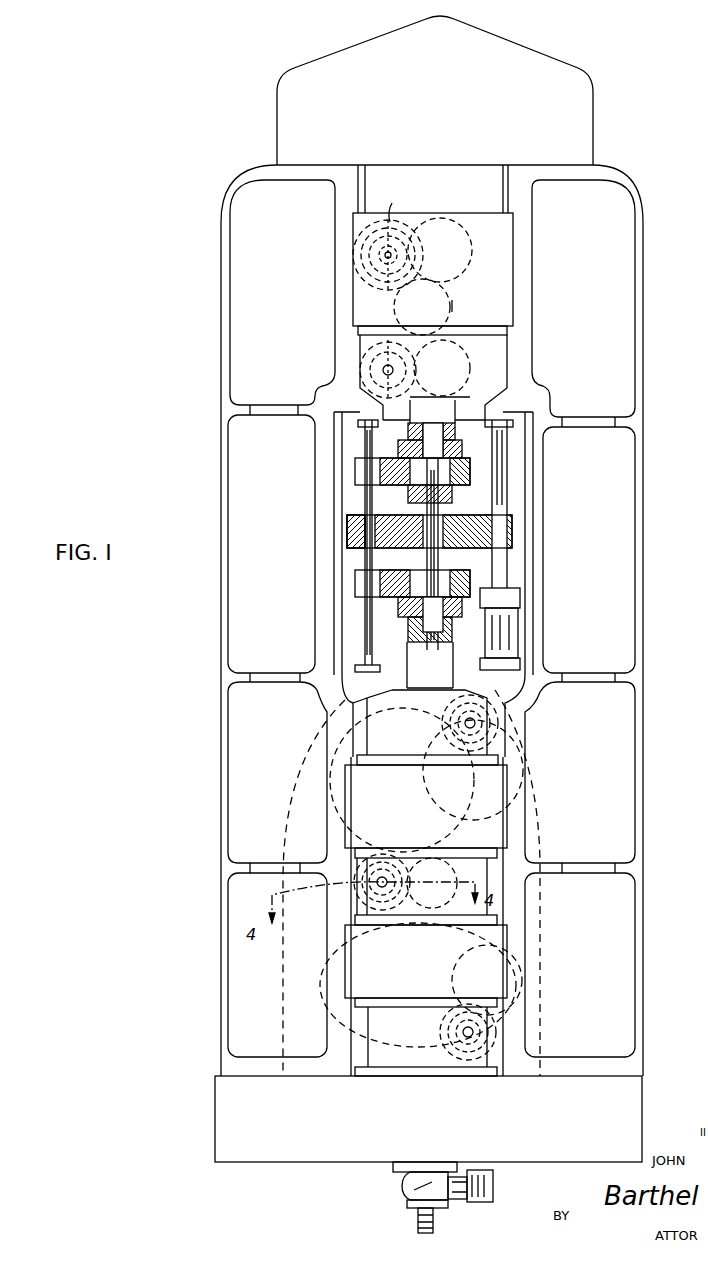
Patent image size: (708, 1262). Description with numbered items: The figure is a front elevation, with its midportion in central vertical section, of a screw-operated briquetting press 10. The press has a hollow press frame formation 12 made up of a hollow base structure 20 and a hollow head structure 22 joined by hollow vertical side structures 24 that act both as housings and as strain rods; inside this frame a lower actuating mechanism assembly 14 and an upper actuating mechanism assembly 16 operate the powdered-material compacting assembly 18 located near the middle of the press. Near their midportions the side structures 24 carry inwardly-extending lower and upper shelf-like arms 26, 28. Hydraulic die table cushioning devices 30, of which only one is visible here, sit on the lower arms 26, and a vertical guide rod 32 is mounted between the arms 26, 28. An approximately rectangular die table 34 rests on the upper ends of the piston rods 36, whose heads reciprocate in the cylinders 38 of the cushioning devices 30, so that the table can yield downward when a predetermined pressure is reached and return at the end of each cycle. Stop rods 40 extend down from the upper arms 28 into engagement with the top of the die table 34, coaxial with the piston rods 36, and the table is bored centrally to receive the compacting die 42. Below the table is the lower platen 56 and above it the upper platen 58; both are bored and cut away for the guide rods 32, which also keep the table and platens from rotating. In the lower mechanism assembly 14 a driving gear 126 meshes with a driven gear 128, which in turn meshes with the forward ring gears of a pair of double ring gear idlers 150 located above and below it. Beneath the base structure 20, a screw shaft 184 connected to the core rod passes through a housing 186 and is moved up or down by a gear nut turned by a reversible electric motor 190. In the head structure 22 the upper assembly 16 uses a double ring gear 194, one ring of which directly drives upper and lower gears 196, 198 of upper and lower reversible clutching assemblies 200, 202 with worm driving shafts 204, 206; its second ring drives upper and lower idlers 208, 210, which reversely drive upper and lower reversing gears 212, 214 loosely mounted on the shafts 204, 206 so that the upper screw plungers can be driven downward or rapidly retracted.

The screw-operated briquetting press 10 is at (604, 166).
The hollow press frame formation 12 is at (648, 287).
The lower actuating mechanism assembly 14 is at (514, 875).
The upper actuating mechanism assembly 16 is at (530, 275).
The powdered-material compacting assembly 18 is at (526, 539).
The hollow base structure 20 is at (560, 1168).
The hollow head structure 22 is at (598, 100).
The hollow vertical side structures 24 is at (216, 416).
The lower shelf-like arms 26 is at (334, 683).
The upper shelf-like arms 28 is at (346, 408).
The hydraulic die table cushioning devices 30 is at (528, 647).
The vertical guide rod 32 is at (365, 501).
The die table 34 is at (347, 542).
The piston rods 36 is at (520, 570).
The cylinders 38 is at (520, 612).
The stop rods 40 is at (512, 470).
The compacting die 42 is at (446, 497).
The lower platen 56 is at (355, 586).
The upper platen 58 is at (355, 470).
The driving gear 126 is at (447, 859).
The driven gear 128 is at (432, 888).
The double ring gear idlers 150 is at (448, 840).
The screw shaft 184 is at (436, 1220).
The housing 186 is at (410, 1192).
The reversible electric motor 190 is at (490, 1186).
The double ring gear 194 is at (452, 307).
The upper gear 196 is at (340, 259).
The lower gear 198 is at (368, 348).
The upper reversible clutching assembly 200 is at (347, 247).
The lower reversible clutching assembly 202 is at (346, 366).
The upper worm driving shaft 204 is at (372, 257).
The lower worm driving shaft 206 is at (368, 372).
The upper idler 208 is at (458, 250).
The lower idler 210 is at (452, 365).
The upper reversing gear 212 is at (396, 203).
The lower reversing gear 214 is at (406, 307).